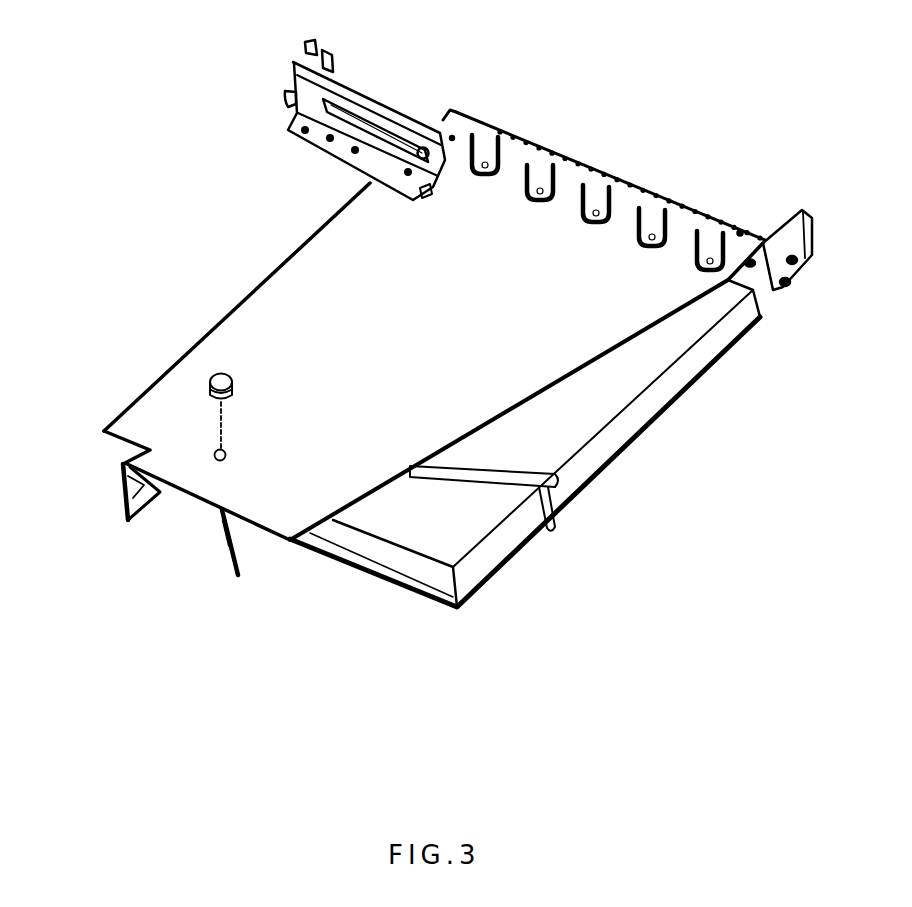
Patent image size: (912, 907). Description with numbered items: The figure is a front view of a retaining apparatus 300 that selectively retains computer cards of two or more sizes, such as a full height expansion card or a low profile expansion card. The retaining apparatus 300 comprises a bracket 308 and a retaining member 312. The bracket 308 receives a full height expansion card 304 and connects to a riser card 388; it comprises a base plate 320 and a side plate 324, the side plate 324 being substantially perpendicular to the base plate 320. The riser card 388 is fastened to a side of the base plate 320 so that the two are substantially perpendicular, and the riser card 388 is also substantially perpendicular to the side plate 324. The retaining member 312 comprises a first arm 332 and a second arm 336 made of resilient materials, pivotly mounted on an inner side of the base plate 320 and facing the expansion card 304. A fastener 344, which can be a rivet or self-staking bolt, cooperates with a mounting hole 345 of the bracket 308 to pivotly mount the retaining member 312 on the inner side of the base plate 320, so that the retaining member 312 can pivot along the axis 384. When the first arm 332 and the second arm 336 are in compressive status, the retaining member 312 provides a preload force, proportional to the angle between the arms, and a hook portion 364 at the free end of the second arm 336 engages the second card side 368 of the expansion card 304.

The retaining apparatus 300 is at (490, 123).
The full height expansion card 304 is at (617, 377).
The bracket 308 is at (448, 415).
The retaining member 312 is at (229, 551).
The base plate 320 is at (287, 293).
The side plate 324 is at (370, 92).
The first arm 332 is at (228, 526).
The second arm 336 is at (510, 483).
The fastener 344 is at (223, 382).
The mounting hole 345 is at (230, 455).
The hook portion 364 is at (553, 527).
The second card side 368 is at (708, 346).
The axis 384 is at (222, 427).
The riser card 388 is at (142, 500).